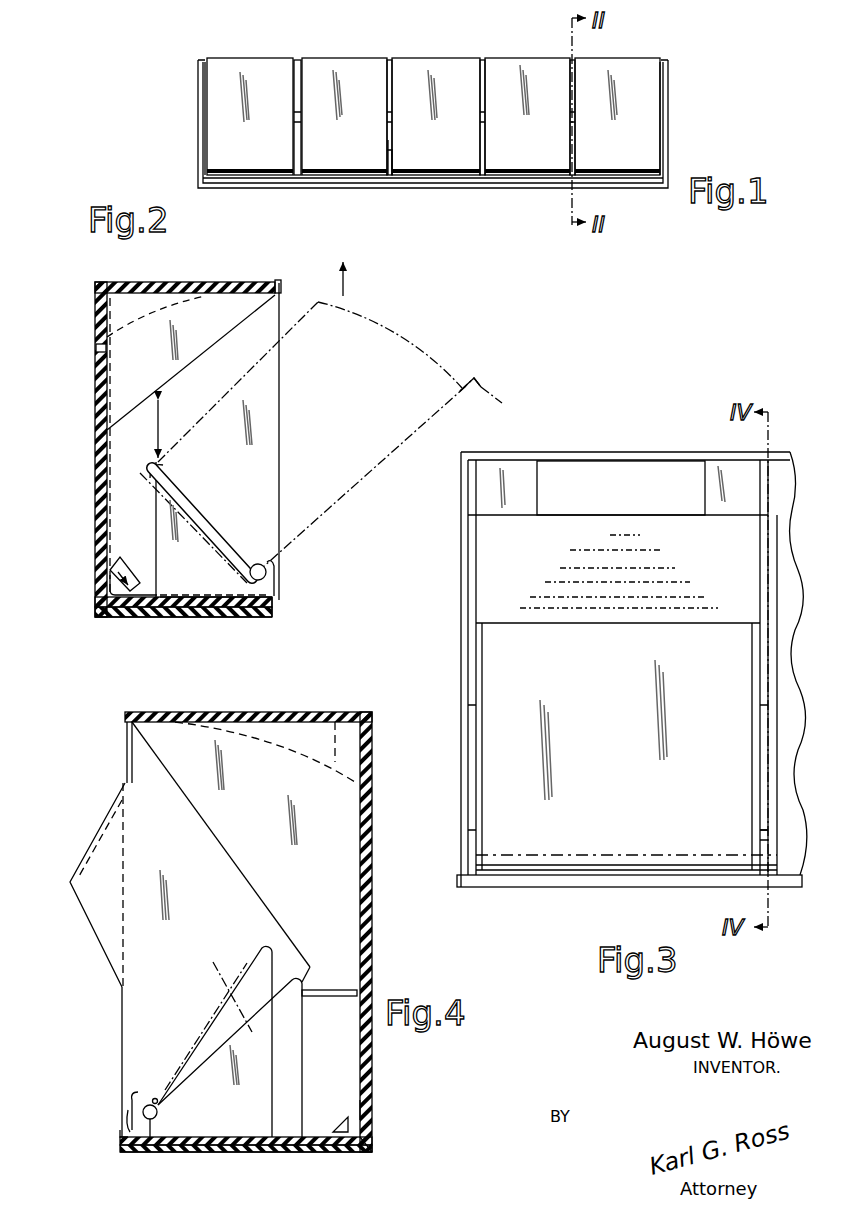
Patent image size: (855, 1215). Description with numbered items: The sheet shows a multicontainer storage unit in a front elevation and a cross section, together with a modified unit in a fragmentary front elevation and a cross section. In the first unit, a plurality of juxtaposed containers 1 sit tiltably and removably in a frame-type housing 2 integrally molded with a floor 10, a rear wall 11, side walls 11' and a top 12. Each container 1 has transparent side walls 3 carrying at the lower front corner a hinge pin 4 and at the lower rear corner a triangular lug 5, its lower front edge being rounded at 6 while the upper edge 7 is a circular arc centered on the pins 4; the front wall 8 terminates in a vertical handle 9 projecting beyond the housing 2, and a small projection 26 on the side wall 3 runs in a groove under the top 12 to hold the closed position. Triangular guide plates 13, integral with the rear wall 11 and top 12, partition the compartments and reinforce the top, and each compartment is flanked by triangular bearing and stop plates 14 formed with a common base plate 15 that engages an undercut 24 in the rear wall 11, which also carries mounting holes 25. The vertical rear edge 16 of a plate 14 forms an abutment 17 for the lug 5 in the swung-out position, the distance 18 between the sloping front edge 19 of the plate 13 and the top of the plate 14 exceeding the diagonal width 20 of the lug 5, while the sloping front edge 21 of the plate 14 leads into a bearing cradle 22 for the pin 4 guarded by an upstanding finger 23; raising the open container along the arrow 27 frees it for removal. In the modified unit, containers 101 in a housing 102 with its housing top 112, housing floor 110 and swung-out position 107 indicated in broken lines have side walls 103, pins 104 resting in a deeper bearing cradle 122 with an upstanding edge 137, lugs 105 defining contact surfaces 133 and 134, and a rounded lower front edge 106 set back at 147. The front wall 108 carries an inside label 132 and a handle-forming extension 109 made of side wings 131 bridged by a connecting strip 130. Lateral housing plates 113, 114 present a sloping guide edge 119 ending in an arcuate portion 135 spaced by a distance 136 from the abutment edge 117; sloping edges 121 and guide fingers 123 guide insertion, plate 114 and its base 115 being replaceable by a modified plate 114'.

In FIG. 1, the container 1 is at (306, 158).
In FIG. 2, the container 1 is at (283, 310).
In FIG. 1, the housing 2 is at (197, 57).
In FIG. 2, the housing 2 is at (95, 282).
In FIG. 2, the side wall 3 is at (255, 456).
In FIG. 2, the hinge pin 4 is at (257, 563).
In FIG. 2, the lug 5 is at (112, 586).
In FIG. 1, the rounded lower front edge 6 is at (642, 178).
In FIG. 2, the rounded lower front edge 6 is at (272, 590).
In FIG. 2, the upper edge 7 is at (170, 300).
In FIG. 1, the front wall 8 is at (438, 80).
In FIG. 2, the front wall 8 is at (281, 413).
In FIG. 1, the handle 9 is at (525, 60).
In FIG. 1, the floor 10 is at (512, 190).
In FIG. 2, the floor 10 is at (148, 619).
In FIG. 2, the rear wall 11 is at (77, 445).
In FIG. 1, the side walls 11' is at (425, 118).
In FIG. 1, the top 12 is at (297, 58).
In FIG. 2, the top 12 is at (201, 284).
In FIG. 2, the triangular guide plate 13 is at (168, 345).
In FIG. 2, the bearing and stop plate 14 is at (188, 575).
In FIG. 1, the base plate 15 is at (526, 175).
In FIG. 2, the base plate 15 is at (226, 618).
In FIG. 2, the rear edge 16 is at (154, 520).
In FIG. 2, the abutment 17 is at (150, 475).
In FIG. 2, the distance 18 is at (156, 428).
In FIG. 1, the sloping front edge 19 is at (389, 70).
In FIG. 2, the sloping front edge 19 is at (208, 345).
In FIG. 2, the diagonal width 20 is at (128, 578).
In FIG. 1, the front edge 21 is at (392, 145).
In FIG. 2, the front edge 21 is at (210, 508).
In FIG. 2, the bearing cradle 22 is at (262, 588).
In FIG. 1, the upstanding finger 23 is at (390, 157).
In FIG. 2, the upstanding finger 23 is at (276, 560).
In FIG. 2, the undercut 24 is at (95, 604).
In FIG. 2, the holes 25 is at (96, 348).
In FIG. 2, the projection 26 is at (430, 350).
In FIG. 2, the arrow 27 is at (345, 280).
In FIG. 3, the container 101 is at (482, 530).
In FIG. 4, the container 101 is at (123, 1013).
In FIG. 3, the housing 102 is at (460, 607).
In FIG. 4, the housing 102 is at (388, 932).
In FIG. 4, the side walls 103 is at (187, 895).
In FIG. 4, the hinge pins 104 is at (150, 1104).
In FIG. 4, the lug 105 is at (340, 1120).
In FIG. 4, the rounded lower front edge 106 is at (128, 1118).
In FIG. 4, the swing position 107 is at (335, 760).
In FIG. 3, the front wall 108 is at (518, 805).
In FIG. 3, the handle-forming extension 109 is at (622, 626).
In FIG. 4, the handle-forming extension 109 is at (106, 812).
In FIG. 4, the bottom wall 110 is at (290, 1143).
In FIG. 3, the top wall 112 is at (575, 452).
In FIG. 4, the top wall 112 is at (268, 712).
In FIG. 4, the lateral housing plate 113 is at (205, 790).
In FIG. 4, the lateral housing plate 114 is at (215, 1041).
In FIG. 4, the modified plate 114' is at (221, 983).
In FIG. 3, the base 115 is at (595, 878).
In FIG. 4, the base 115 is at (226, 1140).
In FIG. 4, the abutment edge 117 is at (310, 985).
In FIG. 3, the sloping guide edge 119 is at (762, 585).
In FIG. 4, the sloping guide edge 119 is at (222, 848).
In FIG. 3, the sloping edges 121 is at (762, 757).
In FIG. 4, the sloping edges 121 is at (210, 1055).
In FIG. 4, the bearing cradle 122 is at (150, 1136).
In FIG. 3, the guide fingers 123 is at (762, 840).
In FIG. 4, the guide fingers 123 is at (135, 1103).
In FIG. 3, the connecting strip 130 is at (560, 608).
In FIG. 4, the connecting strip 130 is at (97, 835).
In FIG. 3, the side wings 131 is at (484, 665).
In FIG. 4, the side wings 131 is at (85, 920).
In FIG. 3, the label 132 is at (670, 475).
In FIG. 4, the label 132 is at (126, 755).
In FIG. 4, the contact surface 133 is at (345, 1152).
In FIG. 4, the contact surface 134 is at (362, 1110).
In FIG. 4, the arcuate bottom portion 135 is at (300, 962).
In FIG. 4, the distance 136 is at (306, 996).
In FIG. 4, the upstanding edge 137 is at (160, 1102).
In FIG. 4, the set-back 147 is at (118, 1135).